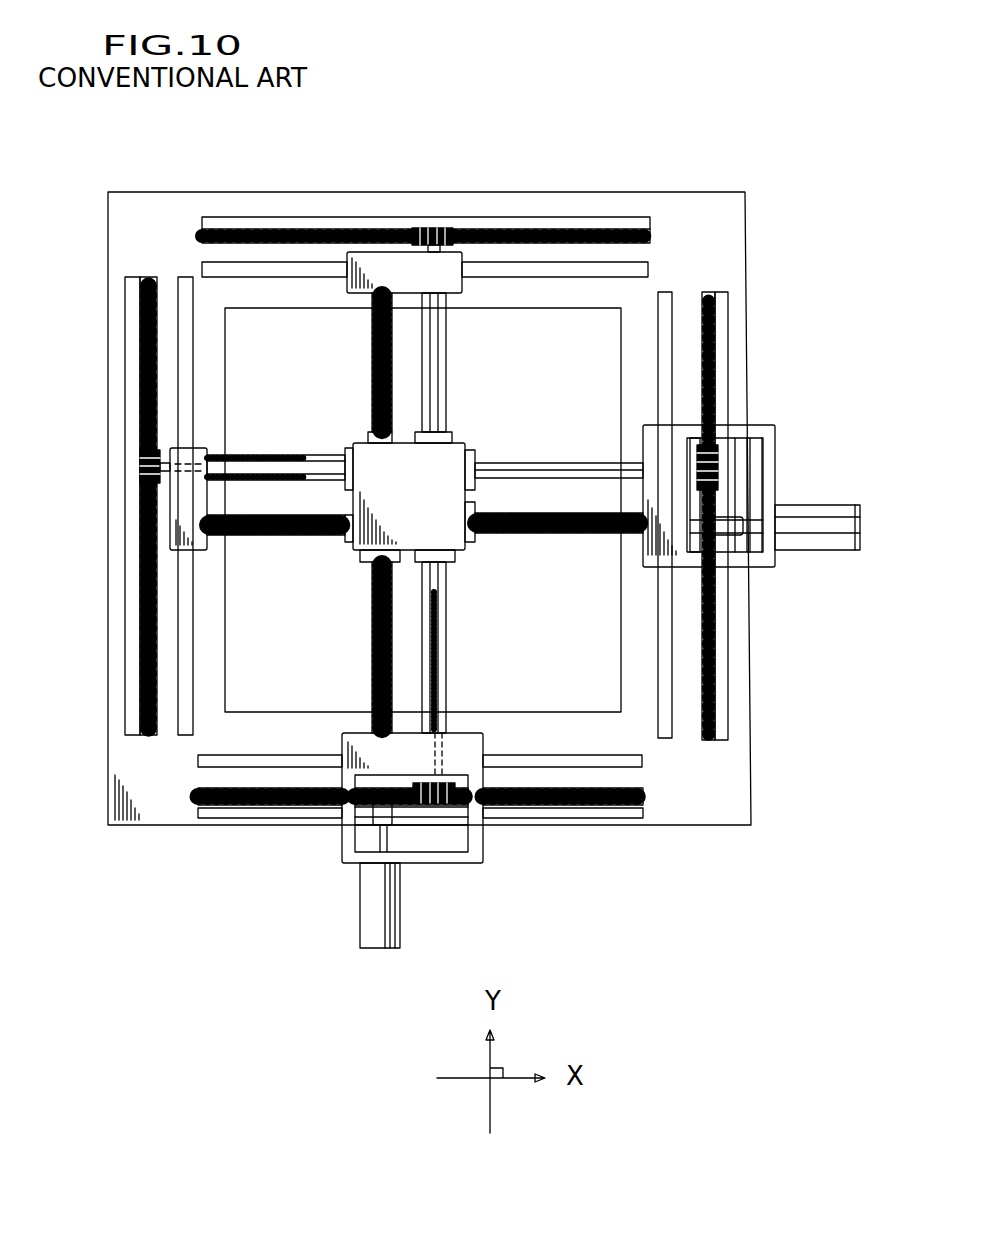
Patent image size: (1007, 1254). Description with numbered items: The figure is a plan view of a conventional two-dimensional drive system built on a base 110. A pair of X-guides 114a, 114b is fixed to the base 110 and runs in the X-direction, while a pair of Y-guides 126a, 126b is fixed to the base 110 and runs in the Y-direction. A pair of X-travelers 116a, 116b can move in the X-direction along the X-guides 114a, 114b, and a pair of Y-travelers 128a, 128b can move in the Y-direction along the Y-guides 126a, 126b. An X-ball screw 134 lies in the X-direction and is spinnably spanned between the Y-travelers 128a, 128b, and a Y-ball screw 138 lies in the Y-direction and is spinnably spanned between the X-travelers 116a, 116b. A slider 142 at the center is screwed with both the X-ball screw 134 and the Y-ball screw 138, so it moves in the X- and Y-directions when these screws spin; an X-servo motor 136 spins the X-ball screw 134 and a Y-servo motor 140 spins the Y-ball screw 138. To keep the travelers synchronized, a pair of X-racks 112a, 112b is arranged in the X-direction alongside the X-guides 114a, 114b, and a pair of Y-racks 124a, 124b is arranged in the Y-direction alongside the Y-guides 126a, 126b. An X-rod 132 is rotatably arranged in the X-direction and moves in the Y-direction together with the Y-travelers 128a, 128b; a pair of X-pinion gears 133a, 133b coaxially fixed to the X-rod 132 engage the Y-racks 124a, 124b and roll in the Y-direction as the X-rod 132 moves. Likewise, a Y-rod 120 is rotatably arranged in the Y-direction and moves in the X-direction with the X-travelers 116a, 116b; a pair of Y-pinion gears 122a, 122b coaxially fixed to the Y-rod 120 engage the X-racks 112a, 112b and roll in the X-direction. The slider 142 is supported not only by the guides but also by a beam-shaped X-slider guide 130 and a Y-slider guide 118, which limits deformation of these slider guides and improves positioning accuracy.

The base 110 is at (697, 195).
The X-rack 112a is at (520, 230).
The X-rack 112b is at (604, 806).
The X-guide 114a is at (262, 262).
The X-guide 114b is at (248, 767).
The X-traveler 116a is at (388, 262).
The X-traveler 116b is at (487, 845).
The Y-slider guide 118 is at (447, 357).
The Y-rod 120 is at (447, 660).
The Y-pinion gear 122a is at (438, 243).
The Y-pinion gear 122b is at (440, 825).
The Y-rack 124a is at (716, 388).
The Y-rack 124b is at (140, 432).
The Y-guide 126a is at (673, 300).
The Y-guide 126b is at (178, 327).
The Y-traveler 128a is at (776, 440).
The Y-traveler 128b is at (178, 505).
The X-slider guide 130 is at (528, 463).
The X-rod 132 is at (258, 467).
The X-pinion gear 133a is at (716, 468).
The X-pinion gear 133b is at (145, 470).
The X-ball screw 134 is at (547, 535).
The X-servo motor 136 is at (832, 550).
The Y-ball screw 138 is at (372, 616).
The Y-servo motor 140 is at (365, 915).
The slider 142 is at (355, 548).